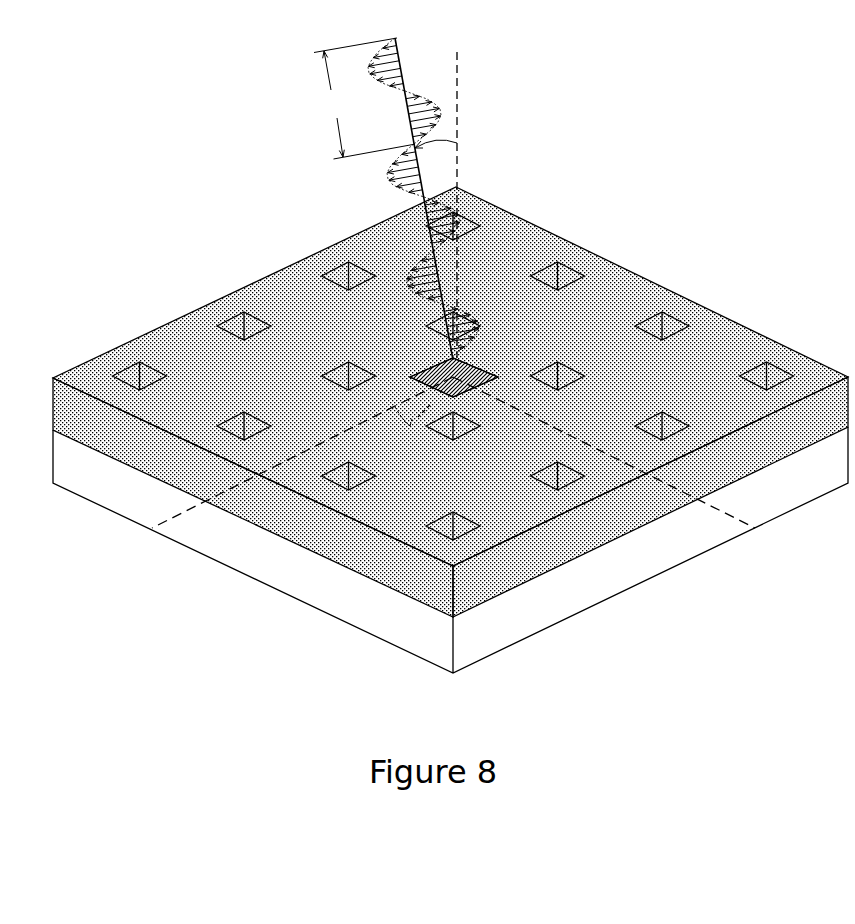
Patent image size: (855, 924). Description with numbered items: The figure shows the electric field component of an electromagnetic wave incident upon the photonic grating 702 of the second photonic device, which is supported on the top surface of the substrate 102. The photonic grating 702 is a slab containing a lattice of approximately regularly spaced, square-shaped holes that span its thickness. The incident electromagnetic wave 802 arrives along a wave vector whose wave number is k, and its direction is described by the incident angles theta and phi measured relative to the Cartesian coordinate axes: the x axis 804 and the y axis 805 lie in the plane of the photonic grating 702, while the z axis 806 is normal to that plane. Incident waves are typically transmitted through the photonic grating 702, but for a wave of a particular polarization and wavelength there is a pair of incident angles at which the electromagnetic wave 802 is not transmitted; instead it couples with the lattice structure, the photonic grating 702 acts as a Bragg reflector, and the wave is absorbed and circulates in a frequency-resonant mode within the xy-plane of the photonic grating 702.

The photonic grating 702 is at (632, 282).
The substrate 102 is at (595, 593).
The incident electromagnetic wave 802 is at (388, 177).
The z axis 806 is at (460, 93).
The x axis 804 is at (175, 518).
The y axis 805 is at (727, 513).